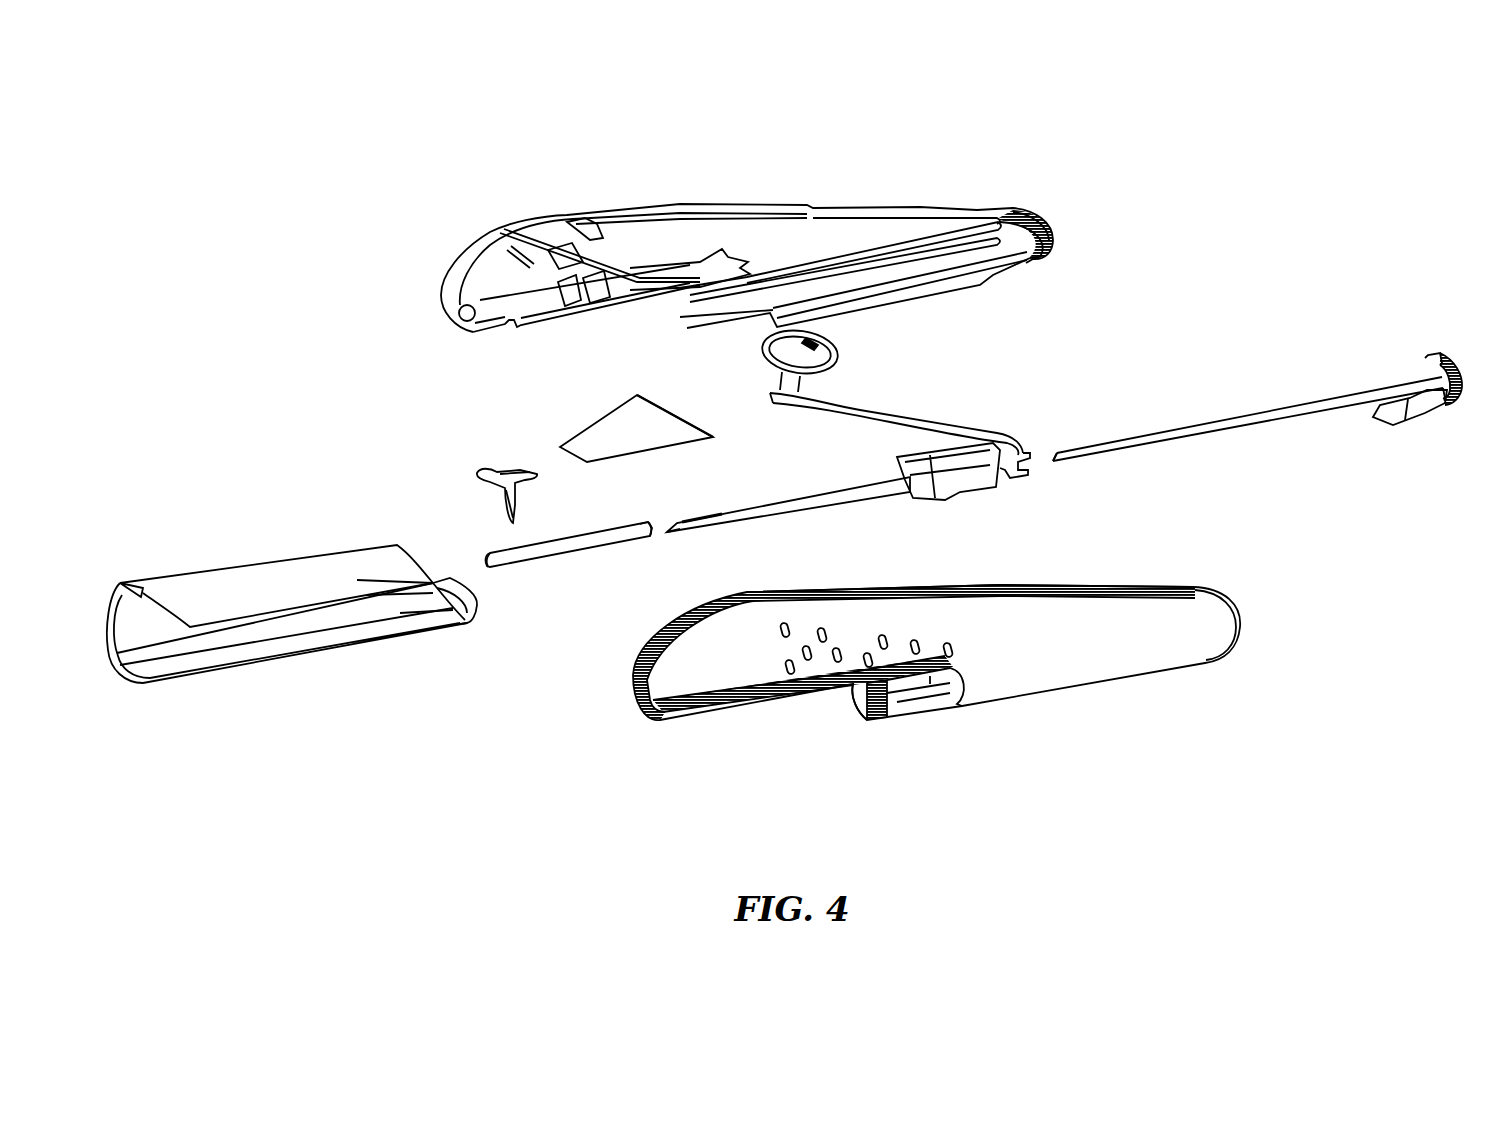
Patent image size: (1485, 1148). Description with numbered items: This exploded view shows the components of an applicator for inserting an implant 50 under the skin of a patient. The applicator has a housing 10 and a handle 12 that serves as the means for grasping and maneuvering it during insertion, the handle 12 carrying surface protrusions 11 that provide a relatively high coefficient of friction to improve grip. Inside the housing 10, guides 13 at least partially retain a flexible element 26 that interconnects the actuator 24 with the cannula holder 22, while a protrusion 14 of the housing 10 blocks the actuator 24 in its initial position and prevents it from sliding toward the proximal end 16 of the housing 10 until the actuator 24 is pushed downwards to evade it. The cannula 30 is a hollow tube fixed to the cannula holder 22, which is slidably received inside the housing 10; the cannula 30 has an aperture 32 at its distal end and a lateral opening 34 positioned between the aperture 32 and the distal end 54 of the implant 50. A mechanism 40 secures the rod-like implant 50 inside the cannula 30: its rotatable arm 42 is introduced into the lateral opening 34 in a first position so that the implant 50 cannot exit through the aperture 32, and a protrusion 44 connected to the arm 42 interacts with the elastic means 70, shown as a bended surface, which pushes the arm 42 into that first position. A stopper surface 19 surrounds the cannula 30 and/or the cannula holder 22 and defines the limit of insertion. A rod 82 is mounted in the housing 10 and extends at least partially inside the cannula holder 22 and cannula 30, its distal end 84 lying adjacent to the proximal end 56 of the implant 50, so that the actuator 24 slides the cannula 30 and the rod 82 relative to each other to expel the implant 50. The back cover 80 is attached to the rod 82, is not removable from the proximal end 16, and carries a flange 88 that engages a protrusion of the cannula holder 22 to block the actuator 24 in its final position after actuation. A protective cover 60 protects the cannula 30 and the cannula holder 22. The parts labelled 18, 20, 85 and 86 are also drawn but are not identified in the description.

The housing 10 is at (932, 188).
The protrusions 11 is at (880, 590).
The handle 12 is at (928, 680).
The guides 13 is at (680, 272).
The protrusion 14 is at (590, 224).
The proximal end 16 is at (1058, 234).
The channel port 18 is at (908, 705).
The stopper surface 19 is at (852, 703).
The actuator lever 20 is at (857, 439).
The cannula holder 22 is at (950, 490).
The actuator 24 is at (775, 353).
The flexible element 26 is at (873, 420).
The cannula 30 is at (788, 506).
The aperture 32 is at (670, 530).
The lateral opening 34 is at (710, 510).
The mechanism 40 is at (468, 456).
The arm 42 is at (498, 508).
The protrusion 44 is at (522, 475).
The implant 50 is at (569, 566).
The distal end 54 is at (487, 566).
The proximal end 56 is at (645, 522).
The protective cover 60 is at (285, 672).
The elastic means 70 is at (612, 422).
The back cover 80 is at (1257, 377).
The rod 82 is at (1240, 428).
The distal end 84 is at (1055, 460).
The tab 85 is at (1420, 353).
The post 86 is at (1446, 400).
The flange 88 is at (1395, 400).